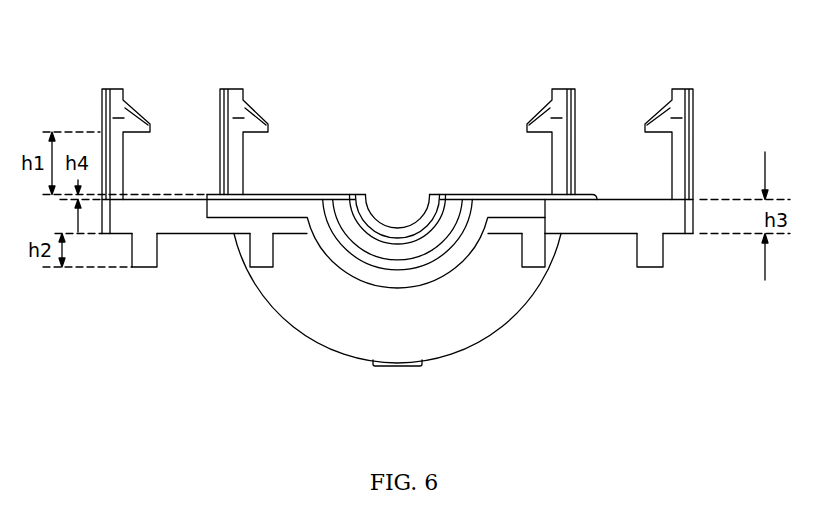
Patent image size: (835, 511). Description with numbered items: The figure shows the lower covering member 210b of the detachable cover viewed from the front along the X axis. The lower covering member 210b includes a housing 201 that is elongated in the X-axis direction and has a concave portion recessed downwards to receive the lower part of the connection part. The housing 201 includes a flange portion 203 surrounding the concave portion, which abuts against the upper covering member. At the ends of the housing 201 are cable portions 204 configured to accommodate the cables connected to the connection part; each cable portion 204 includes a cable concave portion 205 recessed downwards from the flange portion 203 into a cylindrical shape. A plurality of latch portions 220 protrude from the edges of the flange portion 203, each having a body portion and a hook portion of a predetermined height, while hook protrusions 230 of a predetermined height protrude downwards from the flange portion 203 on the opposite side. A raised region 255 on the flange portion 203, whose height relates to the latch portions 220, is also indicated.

The latch portion 220 is at (116, 88).
The upper layer 255 is at (205, 192).
The cable concave portion 205 is at (404, 203).
The cable portion 204 is at (220, 235).
The flange portion 203 is at (600, 217).
The hook protrusion 230 is at (144, 255).
The housing 201 is at (338, 328).
The lower covering member 210b is at (491, 337).